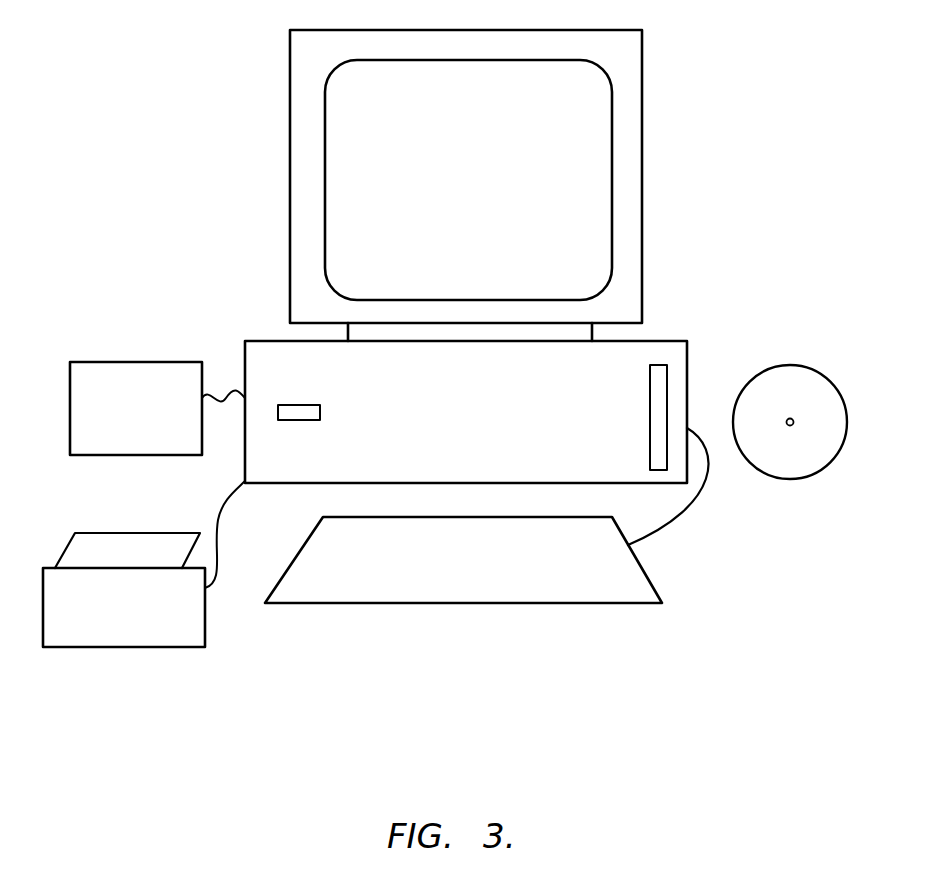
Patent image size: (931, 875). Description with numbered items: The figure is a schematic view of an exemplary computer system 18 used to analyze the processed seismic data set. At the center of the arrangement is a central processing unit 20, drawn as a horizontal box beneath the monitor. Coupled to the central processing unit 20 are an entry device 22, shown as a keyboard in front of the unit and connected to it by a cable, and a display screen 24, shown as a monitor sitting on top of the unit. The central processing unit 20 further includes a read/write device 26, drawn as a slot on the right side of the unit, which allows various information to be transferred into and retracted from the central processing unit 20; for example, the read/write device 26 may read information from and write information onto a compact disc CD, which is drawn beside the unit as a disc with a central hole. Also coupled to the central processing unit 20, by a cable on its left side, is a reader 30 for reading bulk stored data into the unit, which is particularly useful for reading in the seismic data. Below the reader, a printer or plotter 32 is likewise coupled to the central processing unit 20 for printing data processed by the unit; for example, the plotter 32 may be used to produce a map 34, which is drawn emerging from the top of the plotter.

The computer system 18 is at (706, 63).
The central processing unit 20 is at (678, 341).
The entry device 22 is at (641, 571).
The display screen 24 is at (642, 184).
The read/write device 26 is at (668, 395).
The reader 30 is at (113, 362).
The printer or plotter 32 is at (97, 640).
The map 34 is at (110, 546).
The compact disc CD is at (847, 426).